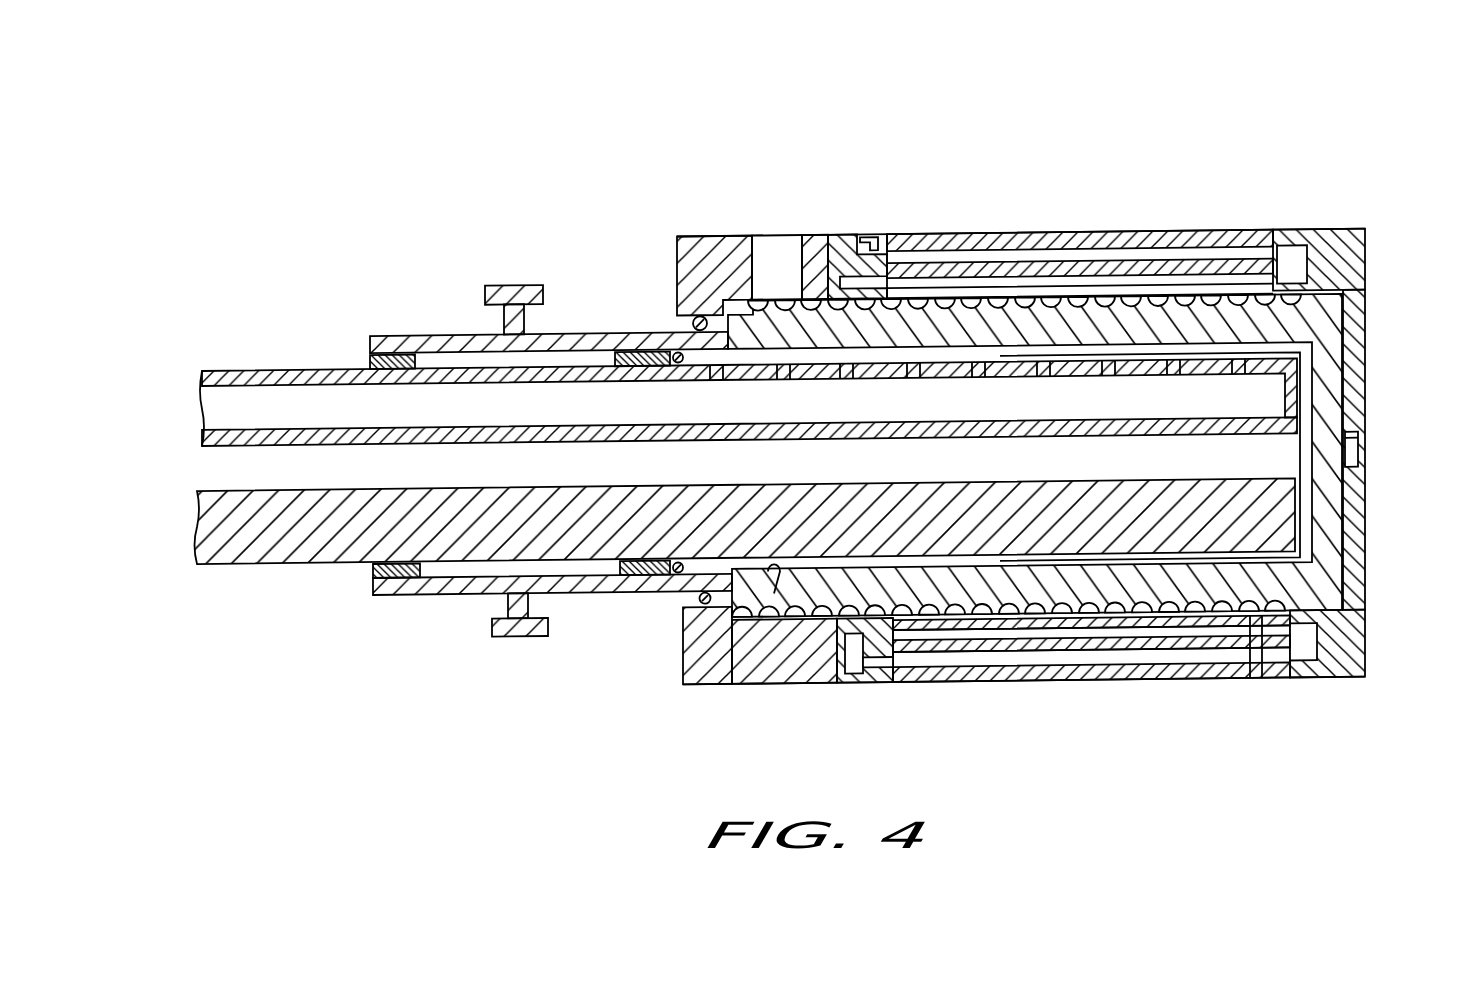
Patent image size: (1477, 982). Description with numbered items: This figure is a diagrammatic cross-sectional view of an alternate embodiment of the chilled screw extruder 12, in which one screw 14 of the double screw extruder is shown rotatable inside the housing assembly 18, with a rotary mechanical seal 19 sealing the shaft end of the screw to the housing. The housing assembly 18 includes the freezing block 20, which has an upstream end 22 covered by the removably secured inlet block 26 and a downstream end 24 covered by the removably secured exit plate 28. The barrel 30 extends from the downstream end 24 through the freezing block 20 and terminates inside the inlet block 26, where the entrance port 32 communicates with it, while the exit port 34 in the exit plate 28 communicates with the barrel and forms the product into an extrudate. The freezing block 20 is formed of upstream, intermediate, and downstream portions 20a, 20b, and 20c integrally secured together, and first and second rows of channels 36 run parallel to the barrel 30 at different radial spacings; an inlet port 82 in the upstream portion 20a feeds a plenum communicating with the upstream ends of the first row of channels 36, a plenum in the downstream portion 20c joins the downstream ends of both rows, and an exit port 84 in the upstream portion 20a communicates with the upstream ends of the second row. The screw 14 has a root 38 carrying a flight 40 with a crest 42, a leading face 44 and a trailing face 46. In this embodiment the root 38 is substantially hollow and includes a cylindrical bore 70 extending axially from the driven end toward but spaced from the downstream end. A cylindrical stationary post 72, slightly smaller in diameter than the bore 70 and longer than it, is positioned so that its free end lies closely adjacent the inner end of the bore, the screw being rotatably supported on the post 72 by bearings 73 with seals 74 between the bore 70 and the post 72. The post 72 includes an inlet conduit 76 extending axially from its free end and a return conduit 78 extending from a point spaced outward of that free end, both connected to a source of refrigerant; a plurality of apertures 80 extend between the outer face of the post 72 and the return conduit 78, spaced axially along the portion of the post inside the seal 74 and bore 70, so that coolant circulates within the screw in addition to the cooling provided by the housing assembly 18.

The double screw extruder 12 is at (1311, 176).
The screw 14 is at (1079, 523).
The housing assembly 18 is at (1057, 705).
The rotary mechanical seal 19 is at (693, 326).
The freezing block 20 is at (1111, 383).
The upstream portion 20a is at (844, 239).
The intermediate portion 20b is at (1196, 240).
The downstream portion 20c is at (1312, 240).
The upstream end 22 is at (815, 668).
The downstream end 24 is at (1368, 665).
The inlet block 26 is at (702, 668).
The exit plate 28 is at (1368, 610).
The barrel 30 is at (1026, 630).
The entrance port 32 is at (775, 258).
The exit port 34 is at (1358, 470).
The channels 36 is at (1012, 282).
The root 38 is at (1108, 618).
The flight 40 is at (1138, 625).
The crest 42 is at (1262, 660).
The leading face 44 is at (1198, 645).
The trailing face 46 is at (1303, 652).
The cylindrical bore 70 is at (768, 578).
The stationary post 72 is at (258, 572).
The bearings 73 is at (400, 583).
The seal 74 is at (676, 580).
The inlet conduit 76 is at (225, 485).
The return conduit 78 is at (233, 413).
The apertures 80 is at (905, 392).
The inlet port 82 is at (858, 690).
The exit port 84 is at (872, 245).